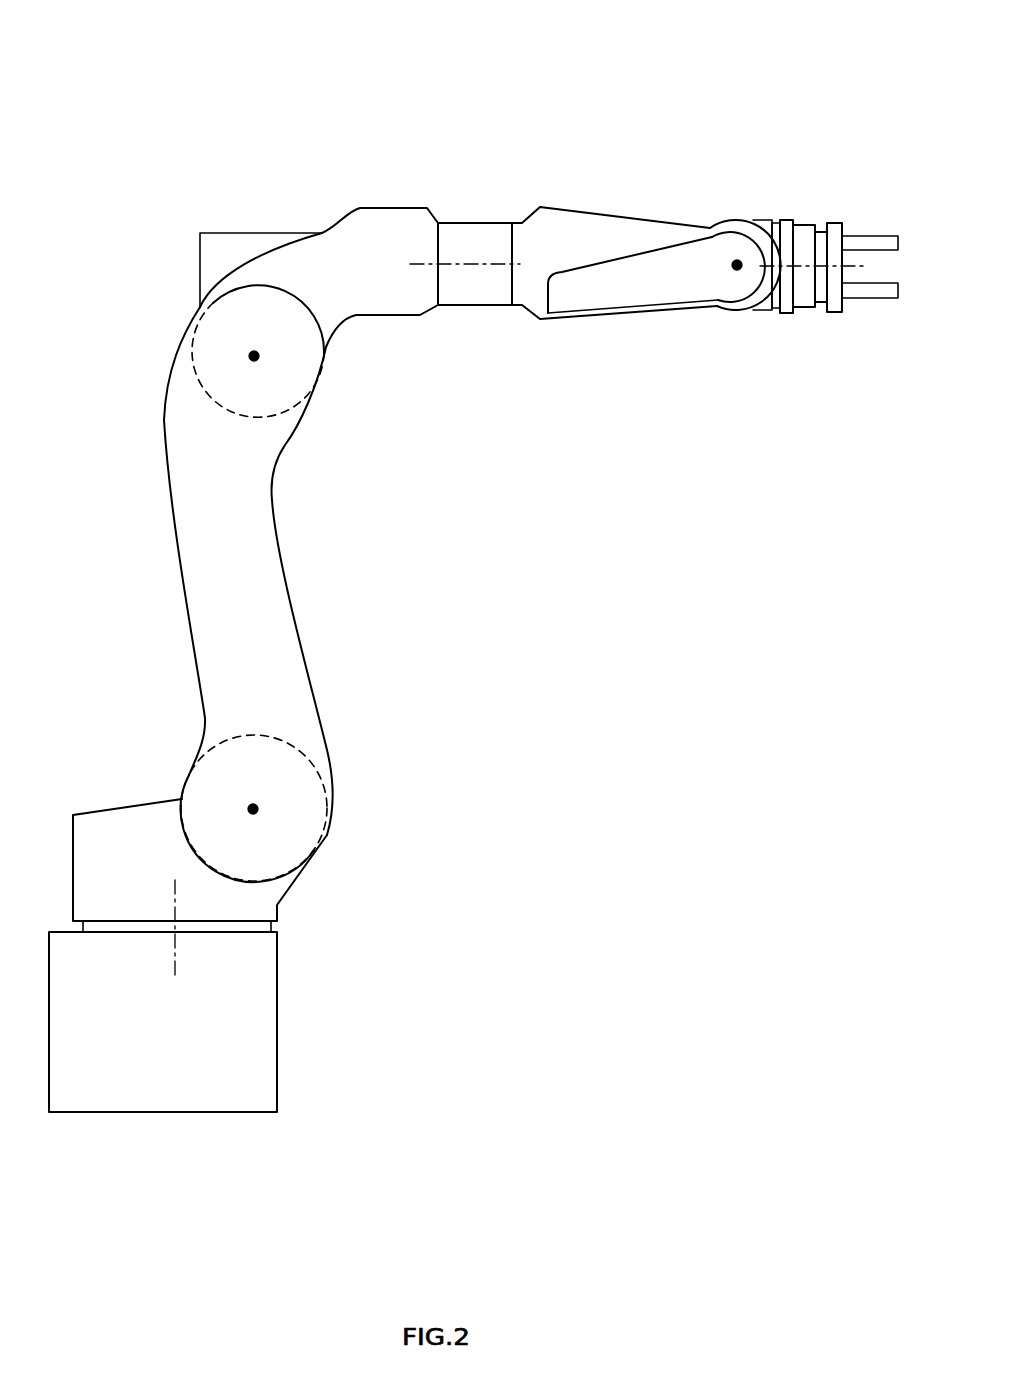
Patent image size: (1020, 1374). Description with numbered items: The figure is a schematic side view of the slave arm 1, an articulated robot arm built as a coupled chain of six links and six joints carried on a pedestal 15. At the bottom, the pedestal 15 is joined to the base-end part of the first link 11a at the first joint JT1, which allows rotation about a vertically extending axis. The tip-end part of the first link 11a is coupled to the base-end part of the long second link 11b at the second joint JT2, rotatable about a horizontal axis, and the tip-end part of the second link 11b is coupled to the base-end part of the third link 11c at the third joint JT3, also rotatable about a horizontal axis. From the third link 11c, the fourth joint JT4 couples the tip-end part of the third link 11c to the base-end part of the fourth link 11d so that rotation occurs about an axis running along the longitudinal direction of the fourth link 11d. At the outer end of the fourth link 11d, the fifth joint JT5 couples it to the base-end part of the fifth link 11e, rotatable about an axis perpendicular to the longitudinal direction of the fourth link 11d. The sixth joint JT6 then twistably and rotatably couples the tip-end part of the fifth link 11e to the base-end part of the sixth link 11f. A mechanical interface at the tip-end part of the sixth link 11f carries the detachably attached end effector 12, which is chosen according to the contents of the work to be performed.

The slave arm 1 is at (478, 24).
The first link 11a is at (115, 805).
The second link 11b is at (183, 568).
The third link 11c is at (333, 227).
The fourth link 11d is at (622, 208).
The fifth link 11e is at (785, 218).
The sixth link 11f is at (817, 228).
The end effector 12 is at (867, 228).
The pedestal 15 is at (278, 1024).
The first joint JT1 is at (283, 930).
The second joint JT2 is at (329, 833).
The third joint JT3 is at (187, 331).
The fourth joint JT4 is at (480, 221).
The fifth joint JT5 is at (739, 314).
The sixth joint JT6 is at (821, 313).